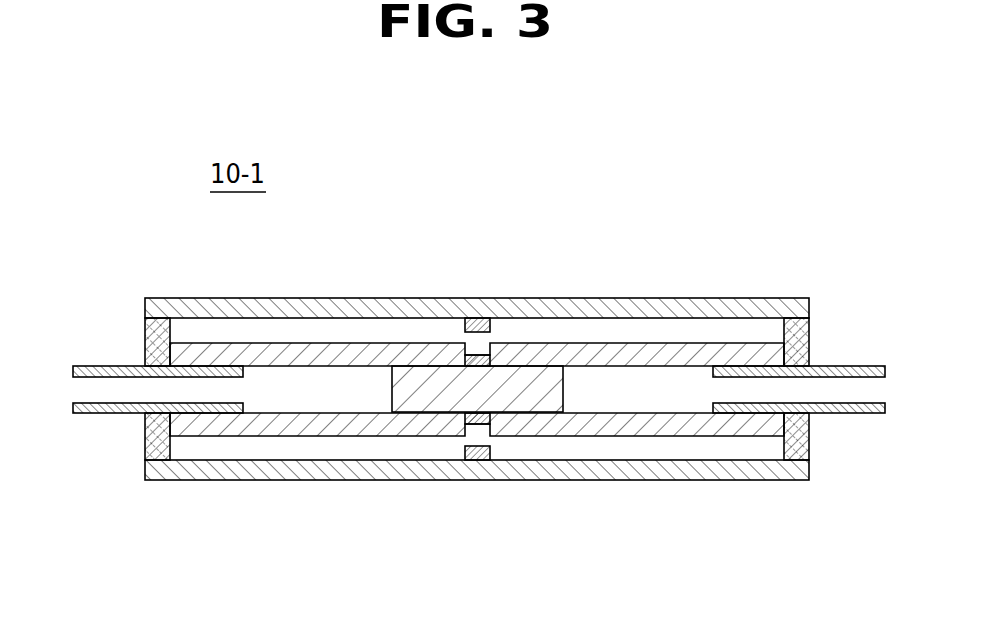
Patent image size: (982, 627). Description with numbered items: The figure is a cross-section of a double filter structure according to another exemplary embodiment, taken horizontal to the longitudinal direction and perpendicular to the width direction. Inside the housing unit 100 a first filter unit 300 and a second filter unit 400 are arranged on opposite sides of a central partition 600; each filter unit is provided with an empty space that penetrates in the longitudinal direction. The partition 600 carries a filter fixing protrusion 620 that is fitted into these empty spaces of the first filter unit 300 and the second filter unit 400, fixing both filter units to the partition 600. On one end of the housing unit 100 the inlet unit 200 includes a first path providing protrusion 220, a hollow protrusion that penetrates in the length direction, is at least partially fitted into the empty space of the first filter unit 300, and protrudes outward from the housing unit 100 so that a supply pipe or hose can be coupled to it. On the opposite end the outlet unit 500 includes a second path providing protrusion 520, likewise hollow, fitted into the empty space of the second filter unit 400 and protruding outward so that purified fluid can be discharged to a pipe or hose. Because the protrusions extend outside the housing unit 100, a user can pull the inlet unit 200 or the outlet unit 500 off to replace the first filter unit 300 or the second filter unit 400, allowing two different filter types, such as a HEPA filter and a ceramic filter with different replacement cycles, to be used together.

The housing unit 100 is at (318, 305).
The inlet unit 200 is at (146, 330).
The first path providing protrusion 220 is at (107, 404).
The first filter unit 300 is at (299, 425).
The second filter unit 400 is at (693, 425).
The outlet unit 500 is at (806, 437).
The second path providing protrusion 520 is at (852, 368).
The partition 600 is at (481, 458).
The filter fixing protrusion 620 is at (500, 386).